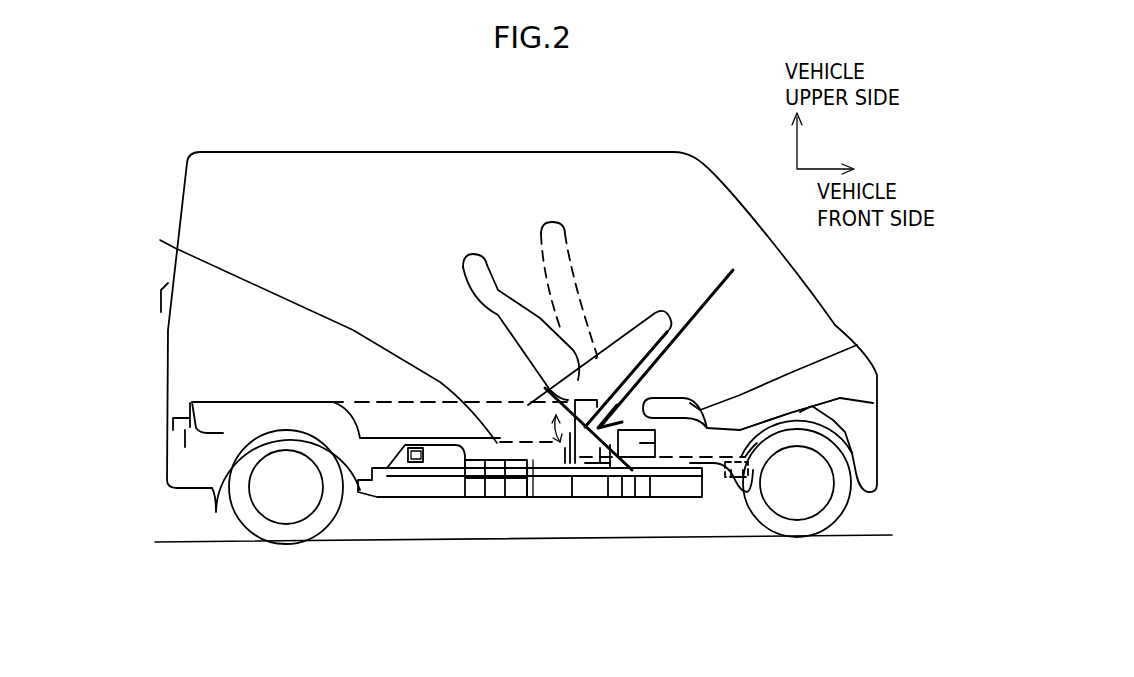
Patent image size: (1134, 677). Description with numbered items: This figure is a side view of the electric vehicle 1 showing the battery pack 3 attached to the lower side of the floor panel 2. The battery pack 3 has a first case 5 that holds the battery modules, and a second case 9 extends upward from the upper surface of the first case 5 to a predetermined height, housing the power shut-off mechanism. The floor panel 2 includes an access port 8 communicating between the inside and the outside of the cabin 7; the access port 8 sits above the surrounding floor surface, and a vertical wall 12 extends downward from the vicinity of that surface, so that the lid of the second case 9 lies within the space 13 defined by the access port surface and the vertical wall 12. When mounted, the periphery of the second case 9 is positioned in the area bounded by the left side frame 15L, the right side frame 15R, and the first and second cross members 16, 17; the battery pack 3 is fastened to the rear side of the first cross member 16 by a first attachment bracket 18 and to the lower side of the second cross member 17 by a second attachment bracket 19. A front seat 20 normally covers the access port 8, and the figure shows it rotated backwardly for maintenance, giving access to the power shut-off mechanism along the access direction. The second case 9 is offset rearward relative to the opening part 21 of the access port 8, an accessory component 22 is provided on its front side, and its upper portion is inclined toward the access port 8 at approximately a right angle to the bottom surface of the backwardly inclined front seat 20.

The electric vehicle 1 is at (703, 127).
The floor panel 2 is at (240, 400).
The battery pack 3 is at (400, 487).
The first case 5 is at (437, 498).
The cabin 7 is at (600, 183).
The access port 8 is at (655, 386).
The second case 9 is at (583, 448).
The vertical wall 12 is at (575, 400).
The space 13 is at (630, 414).
The left side frame 15L is at (532, 548).
The right side frame 15R is at (540, 458).
The first cross member 16 is at (738, 480).
The second cross member 17 is at (160, 240).
The first attachment bracket 18 is at (627, 498).
The second attachment bracket 19 is at (490, 478).
The front seat 20 is at (470, 258).
The opening part 21 is at (857, 345).
The accessory component 22 is at (873, 403).